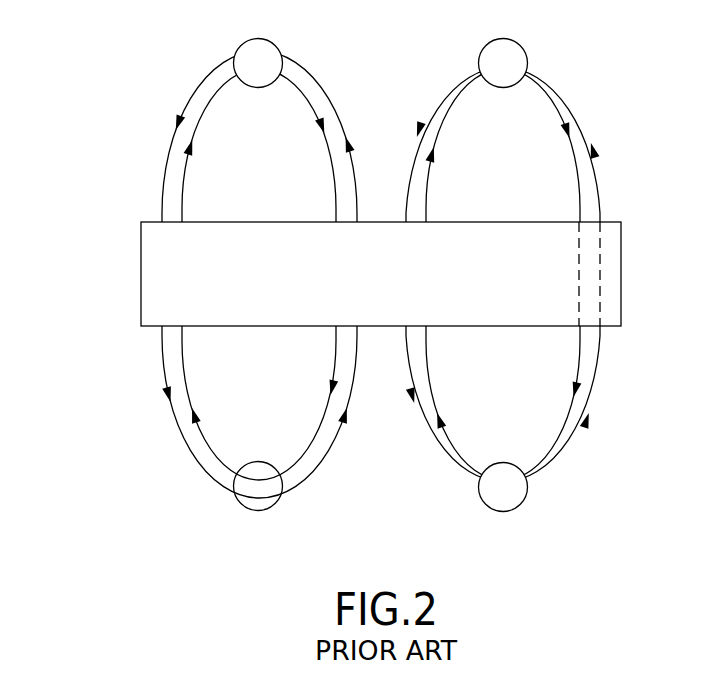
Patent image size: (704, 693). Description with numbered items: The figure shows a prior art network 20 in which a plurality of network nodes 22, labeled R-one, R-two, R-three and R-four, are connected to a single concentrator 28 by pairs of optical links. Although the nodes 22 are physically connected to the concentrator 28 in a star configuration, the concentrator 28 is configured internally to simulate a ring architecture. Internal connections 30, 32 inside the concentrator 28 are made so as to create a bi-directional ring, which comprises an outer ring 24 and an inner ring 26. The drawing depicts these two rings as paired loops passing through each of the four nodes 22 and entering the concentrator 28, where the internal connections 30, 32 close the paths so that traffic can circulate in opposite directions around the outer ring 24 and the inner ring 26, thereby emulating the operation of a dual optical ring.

The network 20 is at (112, 427).
The network nodes 22 is at (262, 38).
The outer ring 24 is at (197, 87).
The inner ring 26 is at (213, 97).
The concentrator 28 is at (141, 262).
The internal connection 30 is at (600, 277).
The internal connection 32 is at (580, 276).